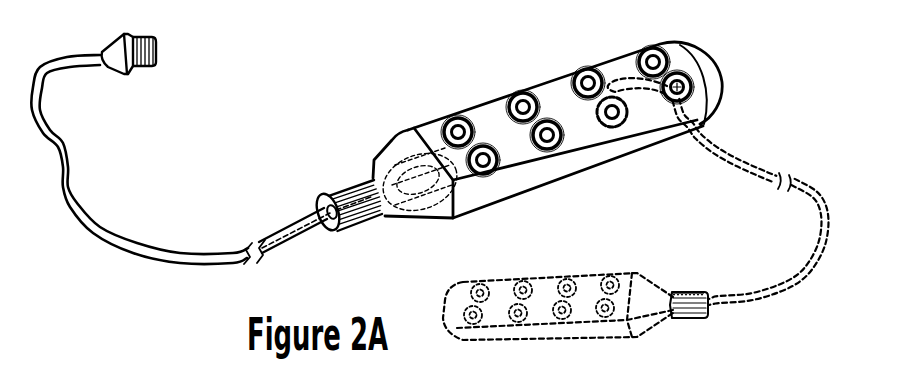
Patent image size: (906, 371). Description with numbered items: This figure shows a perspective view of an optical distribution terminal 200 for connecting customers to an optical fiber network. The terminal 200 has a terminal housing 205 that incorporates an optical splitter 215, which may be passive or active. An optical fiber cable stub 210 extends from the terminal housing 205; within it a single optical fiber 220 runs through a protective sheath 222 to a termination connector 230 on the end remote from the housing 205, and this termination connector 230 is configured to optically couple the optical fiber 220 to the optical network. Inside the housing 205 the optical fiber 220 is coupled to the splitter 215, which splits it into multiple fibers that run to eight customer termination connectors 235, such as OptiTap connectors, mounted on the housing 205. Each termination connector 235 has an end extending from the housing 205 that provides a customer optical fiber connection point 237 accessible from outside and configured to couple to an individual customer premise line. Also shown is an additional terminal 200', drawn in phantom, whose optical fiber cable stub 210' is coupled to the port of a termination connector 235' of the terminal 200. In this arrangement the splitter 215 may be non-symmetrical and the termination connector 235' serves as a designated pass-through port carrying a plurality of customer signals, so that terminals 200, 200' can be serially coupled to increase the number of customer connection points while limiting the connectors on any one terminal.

The optical distribution terminal 200 is at (429, 181).
The terminal housing 205 is at (443, 119).
The optical fiber cable stub 210 is at (141, 159).
The optical splitter 215 is at (403, 159).
The optical fiber 220 is at (312, 224).
The protective sheath 222 is at (287, 238).
The termination connector 230 is at (124, 74).
The customer termination connectors 235 is at (555, 122).
The pass-through termination connector 235' is at (623, 147).
The customer optical fiber connection point 237 is at (679, 83).
The additional terminal 200' is at (575, 290).
The optical fiber cable stub of additional terminal 210' is at (718, 204).